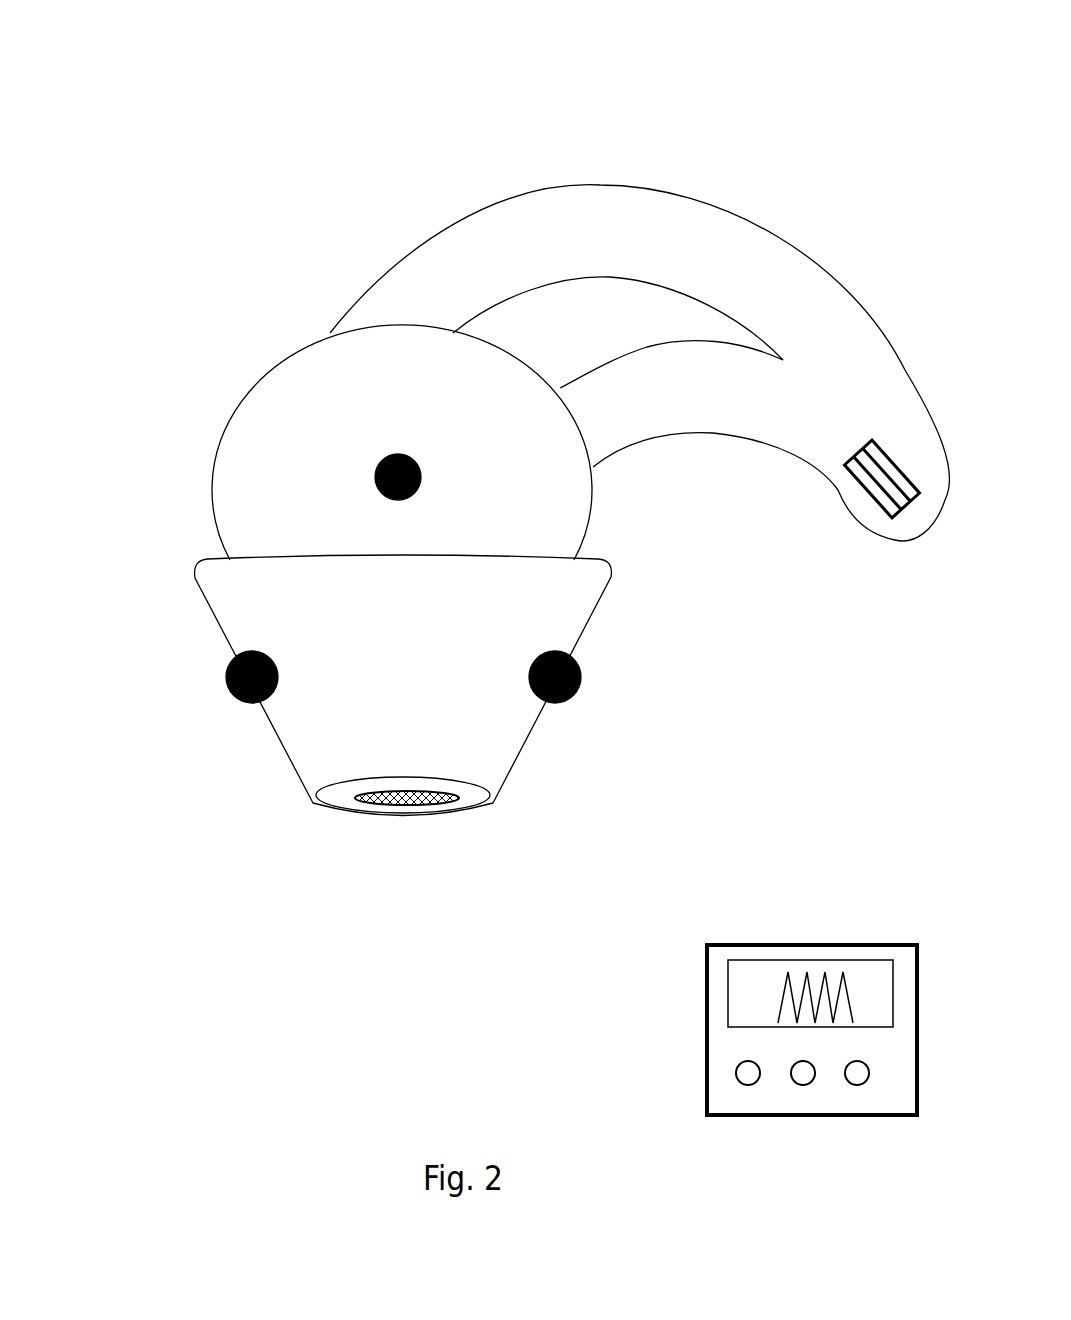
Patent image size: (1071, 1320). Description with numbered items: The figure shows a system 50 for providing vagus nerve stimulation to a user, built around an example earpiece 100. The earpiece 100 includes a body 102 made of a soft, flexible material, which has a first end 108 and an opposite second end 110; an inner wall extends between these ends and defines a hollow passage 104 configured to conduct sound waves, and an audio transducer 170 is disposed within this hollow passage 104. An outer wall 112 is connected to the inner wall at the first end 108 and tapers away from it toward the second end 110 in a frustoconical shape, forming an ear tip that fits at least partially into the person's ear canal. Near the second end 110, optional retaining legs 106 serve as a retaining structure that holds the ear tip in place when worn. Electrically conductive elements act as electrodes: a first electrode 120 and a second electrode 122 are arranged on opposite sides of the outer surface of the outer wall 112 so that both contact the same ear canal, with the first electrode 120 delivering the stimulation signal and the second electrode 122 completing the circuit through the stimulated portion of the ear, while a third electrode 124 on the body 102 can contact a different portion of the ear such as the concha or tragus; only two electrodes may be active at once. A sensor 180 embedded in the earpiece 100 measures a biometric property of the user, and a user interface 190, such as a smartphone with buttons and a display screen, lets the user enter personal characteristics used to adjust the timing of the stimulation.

The system 50 is at (283, 46).
The earpiece 100 is at (503, 145).
The body 102 is at (232, 410).
The hollow passage 104 is at (405, 820).
The retaining legs 106 is at (677, 293).
The first end 108 is at (512, 822).
The second end 110 is at (320, 323).
The outer wall 112 is at (432, 687).
The first electrode 120 is at (230, 695).
The second electrode 122 is at (578, 690).
The third electrode 124 is at (357, 475).
The audio transducer 170 is at (362, 807).
The sensor 180 is at (878, 438).
The user interface 190 is at (797, 930).